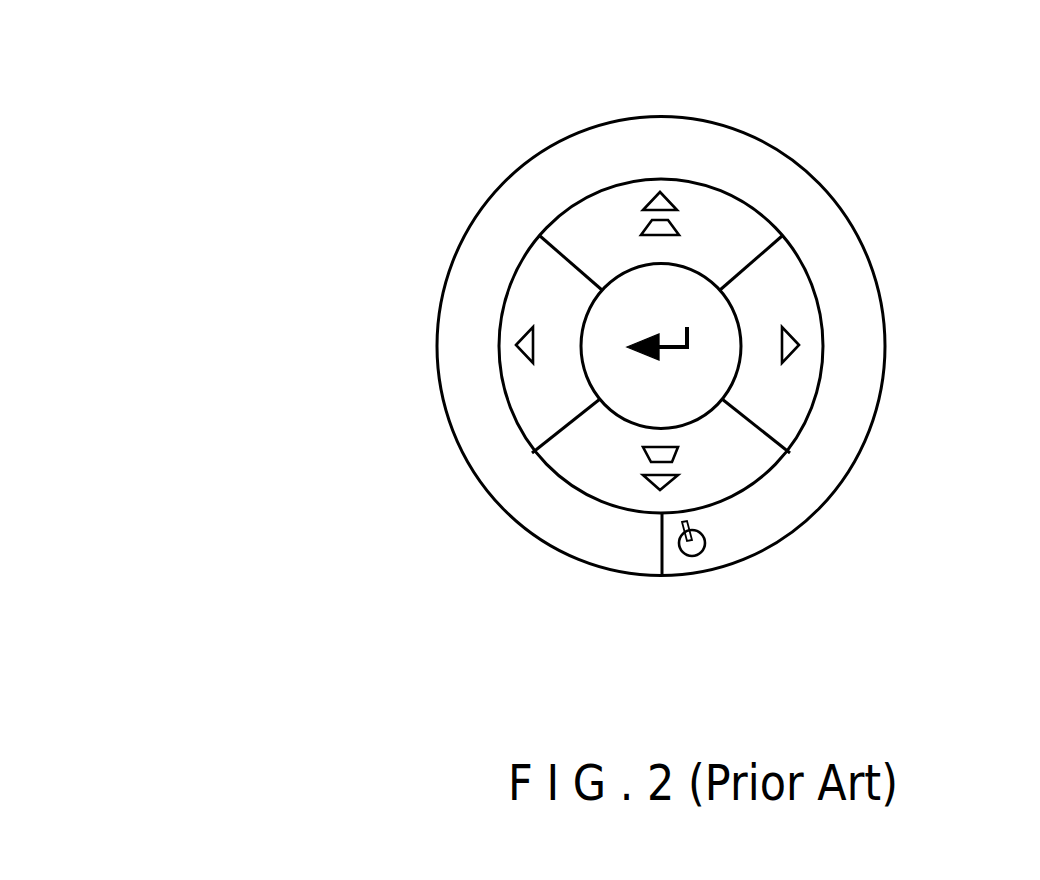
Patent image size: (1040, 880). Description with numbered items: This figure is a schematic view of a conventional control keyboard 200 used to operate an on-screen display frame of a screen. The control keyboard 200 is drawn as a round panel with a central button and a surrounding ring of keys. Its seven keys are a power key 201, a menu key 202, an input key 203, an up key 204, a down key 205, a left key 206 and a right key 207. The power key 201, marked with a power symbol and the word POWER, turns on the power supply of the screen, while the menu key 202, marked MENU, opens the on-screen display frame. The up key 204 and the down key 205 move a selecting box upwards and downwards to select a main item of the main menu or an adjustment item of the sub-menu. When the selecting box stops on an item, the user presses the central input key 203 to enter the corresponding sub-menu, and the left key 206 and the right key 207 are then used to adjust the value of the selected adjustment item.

The control keyboard 200 is at (318, 105).
The power key 201 is at (718, 553).
The menu key 202 is at (625, 555).
The input key 203 is at (630, 287).
The up key 204 is at (710, 208).
The down key 205 is at (565, 452).
The left key 206 is at (516, 309).
The right key 207 is at (798, 400).